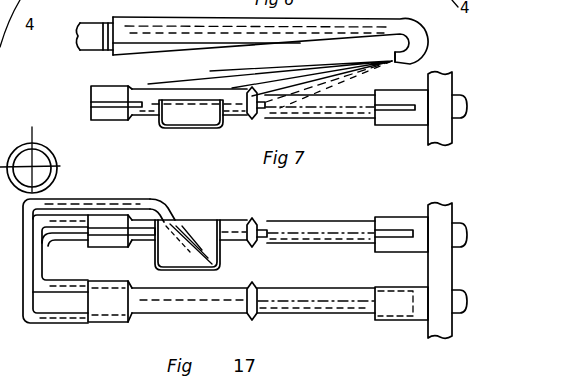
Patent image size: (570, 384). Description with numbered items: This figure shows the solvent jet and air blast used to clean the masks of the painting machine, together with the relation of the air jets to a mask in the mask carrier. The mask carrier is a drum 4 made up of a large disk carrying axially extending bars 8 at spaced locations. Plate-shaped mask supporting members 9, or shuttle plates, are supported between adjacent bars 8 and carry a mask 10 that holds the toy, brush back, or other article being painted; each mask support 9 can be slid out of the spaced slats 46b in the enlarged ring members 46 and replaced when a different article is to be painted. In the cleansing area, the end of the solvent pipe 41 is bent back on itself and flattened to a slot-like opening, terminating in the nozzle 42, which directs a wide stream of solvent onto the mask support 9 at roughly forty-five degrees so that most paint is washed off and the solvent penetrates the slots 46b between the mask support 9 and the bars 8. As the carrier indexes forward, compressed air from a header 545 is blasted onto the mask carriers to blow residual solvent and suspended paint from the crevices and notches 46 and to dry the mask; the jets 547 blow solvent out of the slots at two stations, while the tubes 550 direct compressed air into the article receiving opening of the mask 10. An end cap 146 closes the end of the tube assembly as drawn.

In FIG. 7, the drum 4 is at (442, 134).
In FIG. 17, the drum 4 is at (443, 278).
In FIG. 17, the axially extending bar 8 is at (402, 217).
In FIG. 7, the mask supporting member 9 is at (138, 108).
In FIG. 17, the mask supporting member 9 is at (232, 242).
In FIG. 7, the mask 10 is at (208, 129).
In FIG. 7, the pipe 41 is at (225, 17).
In FIG. 7, the nozzle 42 is at (396, 68).
In FIG. 7, the enlarged ring member 46 is at (250, 89).
In FIG. 17, the enlarged ring member 46 is at (249, 217).
In FIG. 17, the slat 46b is at (258, 228).
In FIG. 7, the end cap 146 is at (95, 90).
In FIG. 17, the header 545 is at (58, 166).
In FIG. 17, the jet 547 is at (47, 281).
In FIG. 17, the tube 550 is at (115, 199).